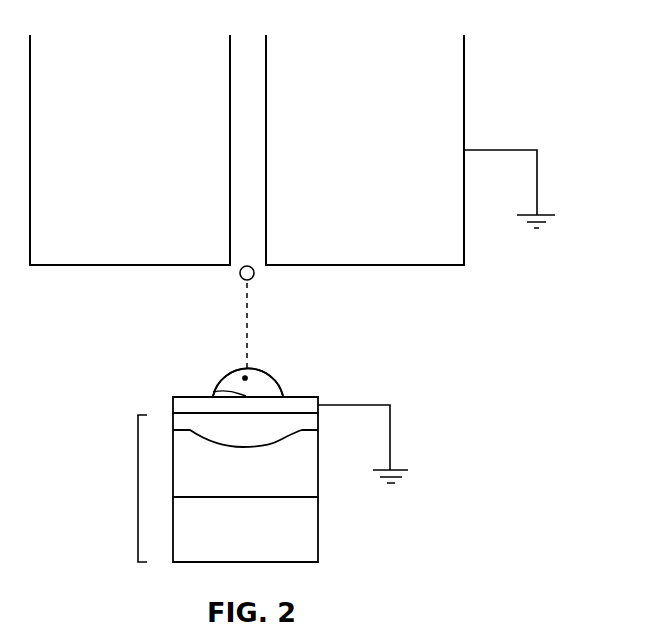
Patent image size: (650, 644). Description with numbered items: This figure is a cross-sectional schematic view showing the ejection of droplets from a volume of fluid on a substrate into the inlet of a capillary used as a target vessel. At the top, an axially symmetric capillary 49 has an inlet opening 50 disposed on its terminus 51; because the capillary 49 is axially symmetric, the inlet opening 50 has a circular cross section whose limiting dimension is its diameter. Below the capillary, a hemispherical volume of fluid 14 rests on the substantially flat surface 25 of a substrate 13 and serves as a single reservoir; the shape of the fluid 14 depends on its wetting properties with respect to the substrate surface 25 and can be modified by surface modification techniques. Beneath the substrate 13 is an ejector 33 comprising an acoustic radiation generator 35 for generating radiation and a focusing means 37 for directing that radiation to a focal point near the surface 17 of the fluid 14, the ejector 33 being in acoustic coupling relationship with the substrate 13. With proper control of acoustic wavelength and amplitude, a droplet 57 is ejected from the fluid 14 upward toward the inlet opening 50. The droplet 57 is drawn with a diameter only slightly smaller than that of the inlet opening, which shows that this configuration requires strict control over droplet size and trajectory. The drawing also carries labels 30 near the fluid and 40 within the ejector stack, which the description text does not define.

The capillary 49 is at (456, 87).
The inlet opening 50 is at (245, 256).
The terminus 51 is at (422, 267).
The droplet 57 is at (254, 274).
The surface of the fluid 17 is at (244, 376).
The droplet dome 30 is at (260, 371).
The fluid 14 is at (265, 386).
The substrate surface 25 is at (213, 390).
The substrate 13 is at (320, 402).
The depression layer 40 is at (280, 440).
The focusing means 37 is at (307, 468).
The acoustic radiation generator 35 is at (307, 528).
The ejector 33 is at (138, 489).